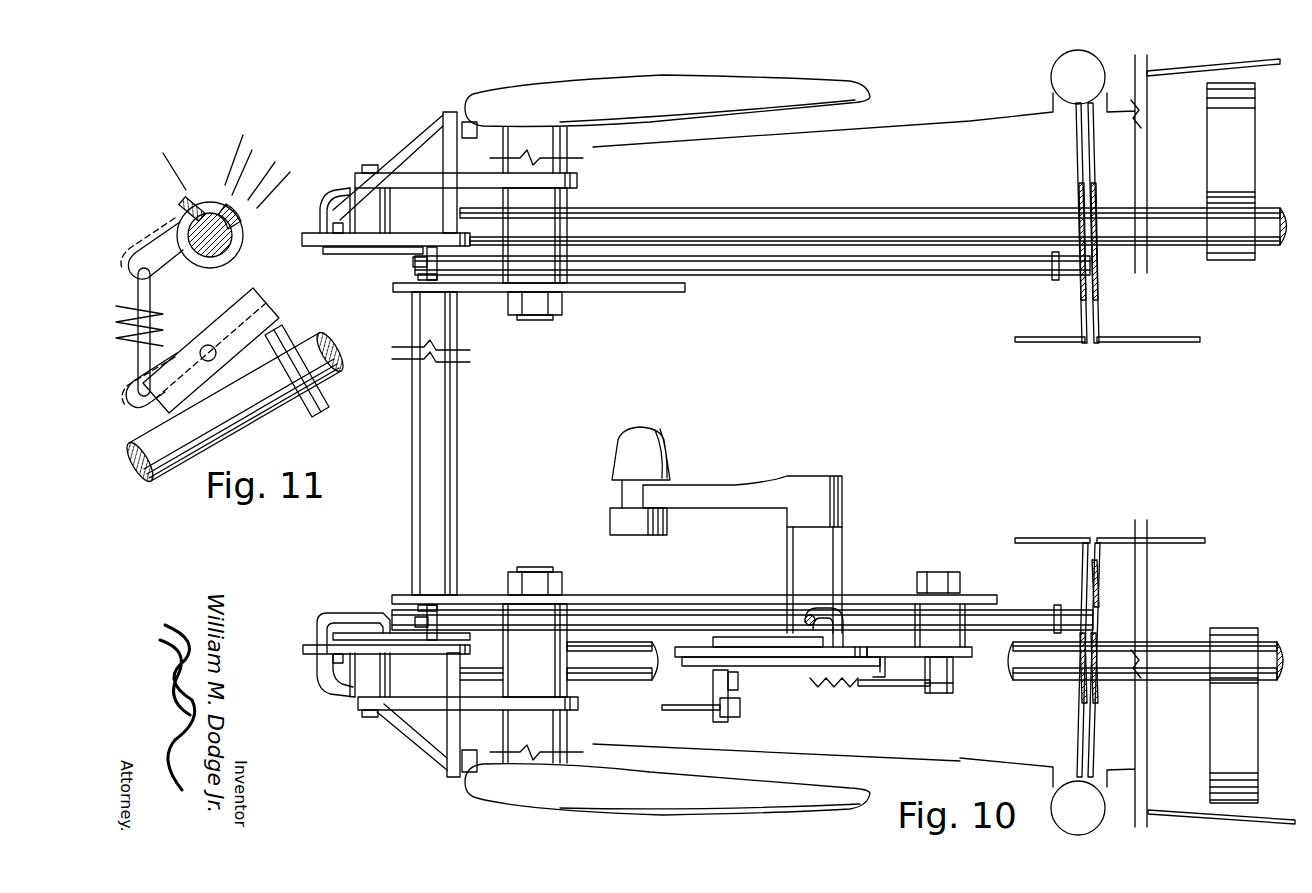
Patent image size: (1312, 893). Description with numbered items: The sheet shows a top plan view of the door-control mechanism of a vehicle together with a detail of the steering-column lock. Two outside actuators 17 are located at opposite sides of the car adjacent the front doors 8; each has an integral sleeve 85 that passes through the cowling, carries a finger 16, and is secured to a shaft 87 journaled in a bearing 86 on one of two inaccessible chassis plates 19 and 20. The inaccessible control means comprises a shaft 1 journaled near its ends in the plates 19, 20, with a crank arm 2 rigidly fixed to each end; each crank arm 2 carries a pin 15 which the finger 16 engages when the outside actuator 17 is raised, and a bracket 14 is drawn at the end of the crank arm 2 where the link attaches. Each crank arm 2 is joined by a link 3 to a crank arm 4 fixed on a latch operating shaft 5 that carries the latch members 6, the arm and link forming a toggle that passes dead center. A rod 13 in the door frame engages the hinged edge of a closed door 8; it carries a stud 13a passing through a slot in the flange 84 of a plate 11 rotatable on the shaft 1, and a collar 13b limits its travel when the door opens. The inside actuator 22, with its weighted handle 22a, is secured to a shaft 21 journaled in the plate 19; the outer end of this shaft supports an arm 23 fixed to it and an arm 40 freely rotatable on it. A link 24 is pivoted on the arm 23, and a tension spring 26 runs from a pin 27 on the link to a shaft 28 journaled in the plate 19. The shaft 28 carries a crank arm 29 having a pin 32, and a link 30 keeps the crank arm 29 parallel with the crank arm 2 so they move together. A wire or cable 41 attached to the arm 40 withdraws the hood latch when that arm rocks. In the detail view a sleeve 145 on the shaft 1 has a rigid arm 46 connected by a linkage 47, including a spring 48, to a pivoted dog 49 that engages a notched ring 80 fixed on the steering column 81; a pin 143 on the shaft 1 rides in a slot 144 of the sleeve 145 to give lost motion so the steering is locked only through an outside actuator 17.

In FIG. 10, the shaft 1 is at (430, 496).
In FIG. 11, the shaft 1 is at (230, 234).
In FIG. 10, the crank arm 2 is at (398, 240).
In FIG. 10, the link 3 is at (412, 150).
In FIG. 10, the crank arm 4 is at (455, 166).
In FIG. 10, the latch operating shaft 5 is at (940, 228).
In FIG. 10, the latch member 6 is at (1242, 170).
In FIG. 10, the door 8 is at (1100, 316).
In FIG. 10, the plate 11 is at (397, 254).
In FIG. 10, the rod 13 is at (1000, 273).
In FIG. 10, the stud 13a is at (413, 264).
In FIG. 10, the collar 13b is at (1053, 281).
In FIG. 10, the bracket 14 is at (322, 222).
In FIG. 10, the pin 15 is at (372, 163).
In FIG. 10, the finger 16 is at (388, 173).
In FIG. 10, the outside actuator 17 is at (518, 100).
In FIG. 10, the chassis plate 19 is at (622, 604).
In FIG. 10, the chassis plate 20 is at (673, 292).
In FIG. 10, the shaft 21 is at (820, 527).
In FIG. 10, the inside actuator 22 is at (785, 485).
In FIG. 10, the handle 22a is at (628, 521).
In FIG. 10, the arm 23 is at (697, 657).
In FIG. 10, the link 24 is at (782, 666).
In FIG. 10, the tension spring 26 is at (913, 686).
In FIG. 10, the pin 27 is at (740, 688).
In FIG. 10, the shaft 28 is at (950, 680).
In FIG. 10, the crank arm 29 is at (893, 647).
In FIG. 10, the link 30 is at (350, 620).
In FIG. 10, the pin 32 is at (885, 672).
In FIG. 10, the arm 40 is at (728, 637).
In FIG. 10, the wire or cable 41 is at (708, 710).
In FIG. 11, the arm 46 is at (163, 250).
In FIG. 11, the linkage 47 is at (150, 288).
In FIG. 11, the spring 48 is at (160, 320).
In FIG. 11, the dog 49 is at (265, 312).
In FIG. 11, the notched ring 80 is at (323, 393).
In FIG. 11, the steering column 81 is at (317, 350).
In FIG. 10, the flange 84 is at (427, 275).
In FIG. 10, the sleeve 85 is at (560, 153).
In FIG. 10, the bearing 86 is at (562, 205).
In FIG. 10, the shaft 87 is at (547, 320).
In FIG. 11, the pin 143 is at (186, 198).
In FIG. 11, the slot 144 is at (215, 210).
In FIG. 11, the sleeve 145 is at (227, 250).